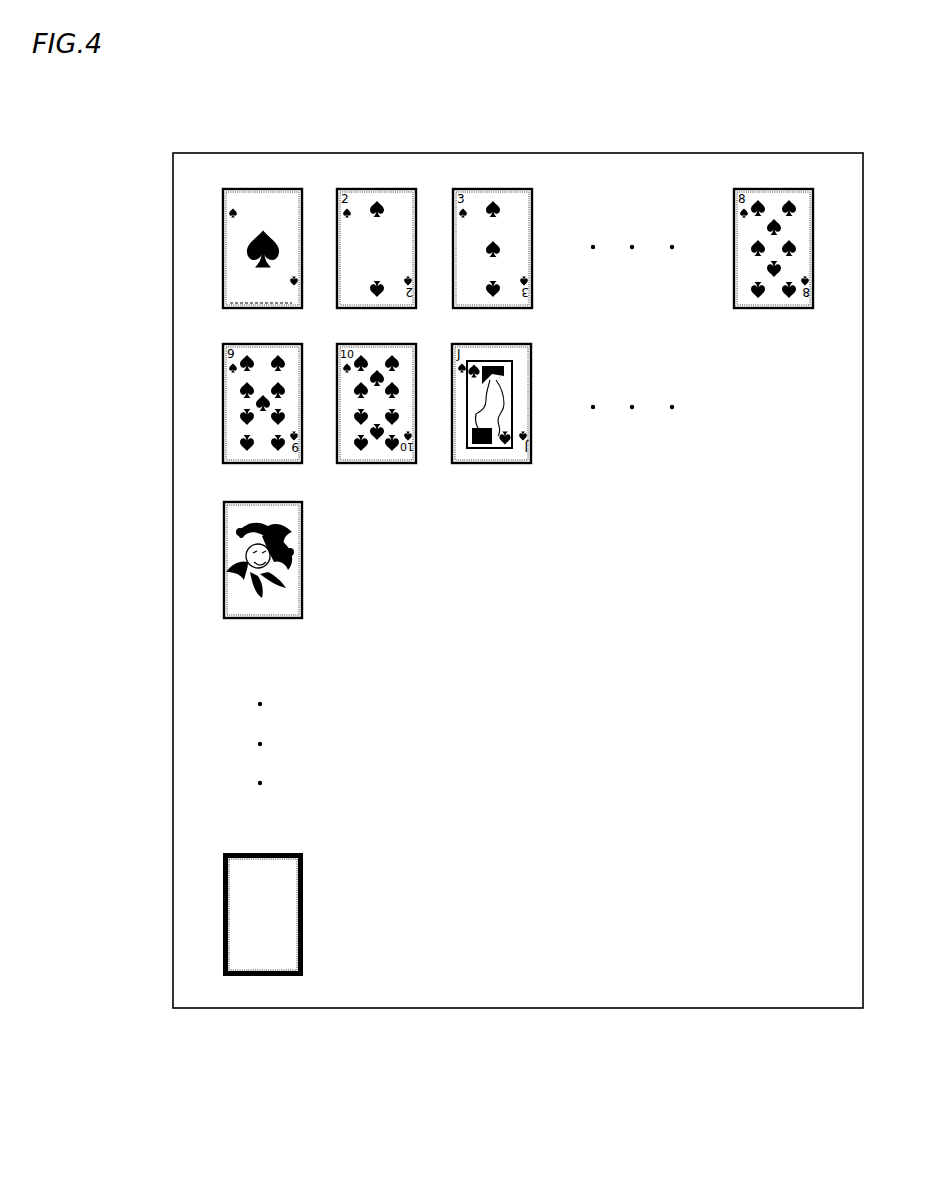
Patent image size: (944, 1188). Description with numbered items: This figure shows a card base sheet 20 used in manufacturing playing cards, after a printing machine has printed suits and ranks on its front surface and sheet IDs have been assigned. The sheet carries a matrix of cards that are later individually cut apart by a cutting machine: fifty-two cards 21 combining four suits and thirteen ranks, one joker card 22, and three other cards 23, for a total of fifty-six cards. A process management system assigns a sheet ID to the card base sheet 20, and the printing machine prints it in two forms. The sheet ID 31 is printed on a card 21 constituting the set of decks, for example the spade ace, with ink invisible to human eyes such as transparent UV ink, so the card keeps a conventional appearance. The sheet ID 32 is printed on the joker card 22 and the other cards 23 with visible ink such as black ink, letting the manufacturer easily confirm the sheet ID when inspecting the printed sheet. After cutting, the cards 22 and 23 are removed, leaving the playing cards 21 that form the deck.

The card base sheet 20 is at (740, 153).
The card 21 is at (223, 218).
The joker card 22 is at (224, 523).
The other card 23 is at (223, 887).
The sheet ID 31 is at (230, 292).
The sheet ID 32 is at (232, 608).